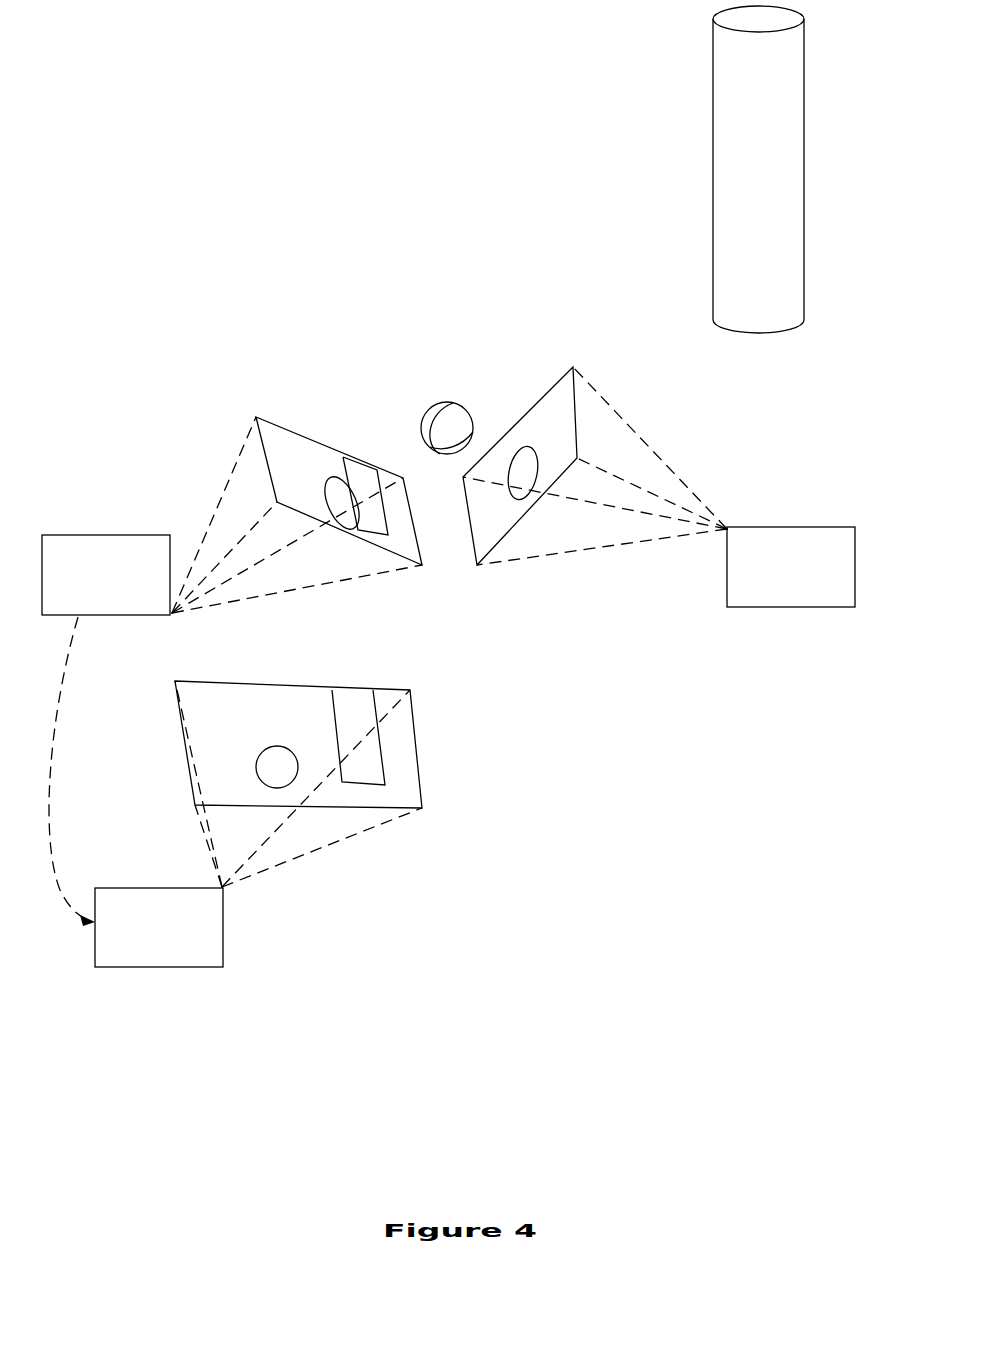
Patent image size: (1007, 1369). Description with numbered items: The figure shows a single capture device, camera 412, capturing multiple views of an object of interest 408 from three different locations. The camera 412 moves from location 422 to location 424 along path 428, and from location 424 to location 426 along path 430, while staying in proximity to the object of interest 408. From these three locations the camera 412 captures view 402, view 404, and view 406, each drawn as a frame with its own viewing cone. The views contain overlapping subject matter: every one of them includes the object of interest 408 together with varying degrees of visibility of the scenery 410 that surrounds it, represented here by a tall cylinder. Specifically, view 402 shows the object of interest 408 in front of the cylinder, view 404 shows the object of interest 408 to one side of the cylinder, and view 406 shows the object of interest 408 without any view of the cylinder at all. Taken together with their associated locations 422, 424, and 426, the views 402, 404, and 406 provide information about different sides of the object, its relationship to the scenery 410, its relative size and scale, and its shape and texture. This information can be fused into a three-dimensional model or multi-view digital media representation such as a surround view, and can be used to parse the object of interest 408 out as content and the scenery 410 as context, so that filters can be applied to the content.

The view 402 is at (265, 468).
The view 404 is at (422, 760).
The view 406 is at (577, 437).
The object of interest 408 is at (443, 403).
The scenery 410 is at (714, 146).
The camera 412 is at (448, 747).
The location 422 is at (172, 613).
The location 424 is at (222, 887).
The location 426 is at (727, 529).
The path 428 is at (72, 771).
The path 430 is at (643, 889).